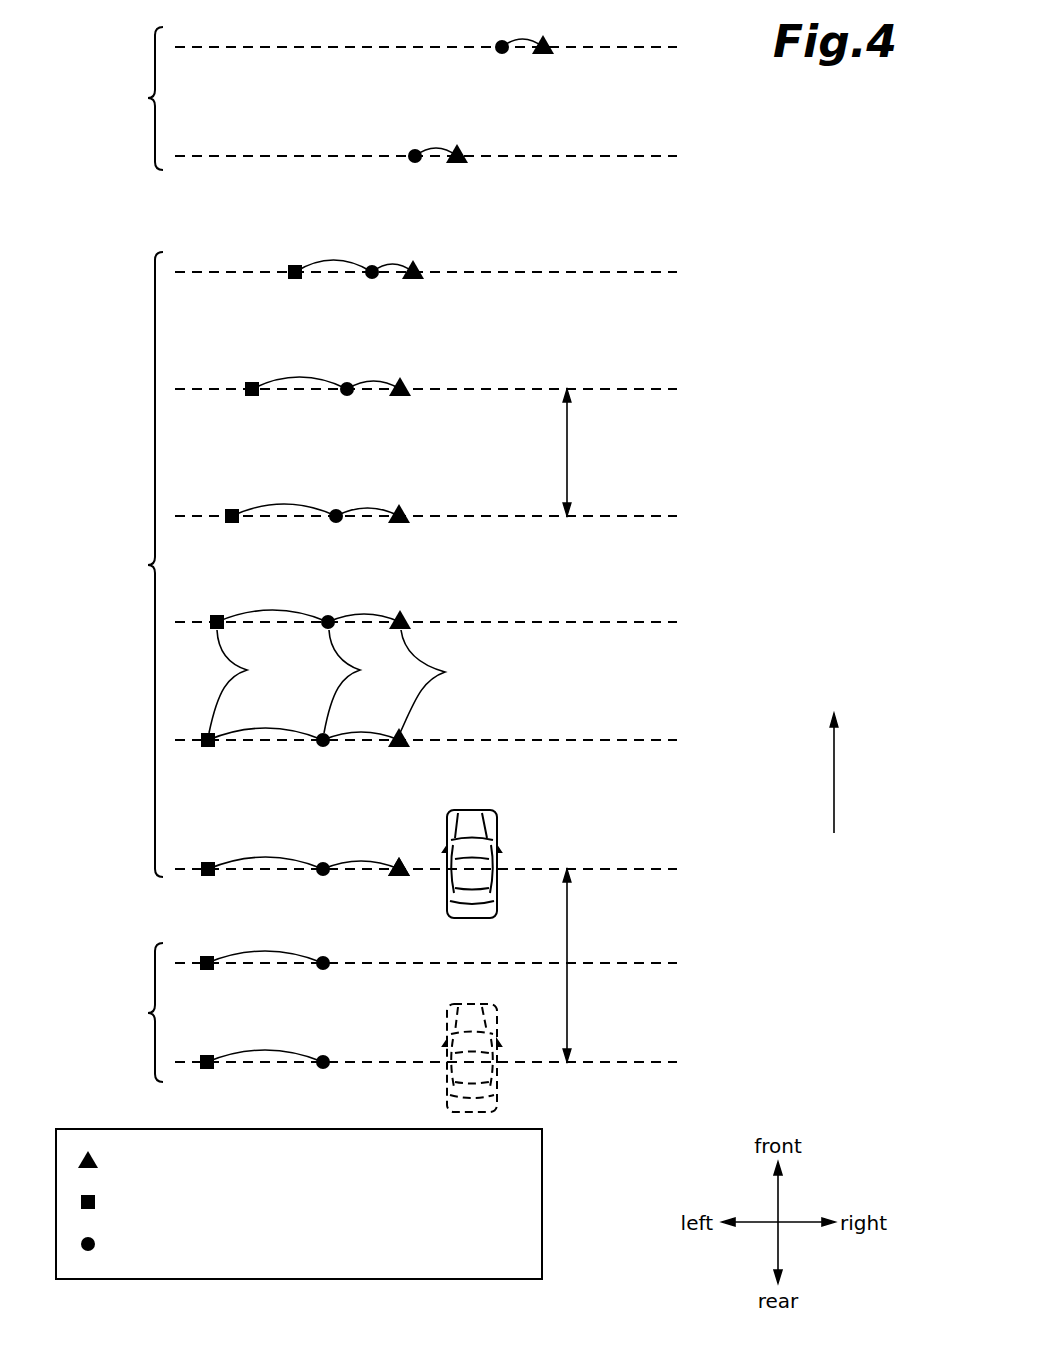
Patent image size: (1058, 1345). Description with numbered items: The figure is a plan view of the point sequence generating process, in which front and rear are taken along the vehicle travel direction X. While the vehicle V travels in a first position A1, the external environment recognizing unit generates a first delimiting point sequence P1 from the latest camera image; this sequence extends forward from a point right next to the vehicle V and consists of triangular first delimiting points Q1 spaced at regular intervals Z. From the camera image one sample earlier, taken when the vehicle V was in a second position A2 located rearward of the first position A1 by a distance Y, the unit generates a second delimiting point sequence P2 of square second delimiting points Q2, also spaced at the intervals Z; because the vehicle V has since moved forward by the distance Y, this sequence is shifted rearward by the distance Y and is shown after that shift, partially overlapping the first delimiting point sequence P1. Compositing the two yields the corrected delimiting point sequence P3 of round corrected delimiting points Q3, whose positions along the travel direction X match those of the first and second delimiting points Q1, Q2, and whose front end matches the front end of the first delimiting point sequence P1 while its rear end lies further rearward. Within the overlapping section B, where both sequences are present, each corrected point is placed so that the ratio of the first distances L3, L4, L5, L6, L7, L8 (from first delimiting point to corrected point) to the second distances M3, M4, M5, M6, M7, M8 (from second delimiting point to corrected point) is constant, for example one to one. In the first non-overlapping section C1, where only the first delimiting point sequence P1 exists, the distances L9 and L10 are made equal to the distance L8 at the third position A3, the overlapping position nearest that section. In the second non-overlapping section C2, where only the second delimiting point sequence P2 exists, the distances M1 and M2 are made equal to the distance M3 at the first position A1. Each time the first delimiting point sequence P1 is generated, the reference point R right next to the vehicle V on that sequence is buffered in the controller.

The fourth distance L10 is at (524, 32).
The fourth distance L9 is at (438, 141).
The first distance L8 is at (398, 256).
The first distance L7 is at (379, 373).
The first distance L6 is at (373, 500).
The first distance L5 is at (369, 606).
The first distance L4 is at (366, 724).
The first distance L3 is at (366, 853).
The second distance M8 is at (333, 256).
The second distance M7 is at (299, 373).
The second distance M6 is at (284, 500).
The second distance M5 is at (272, 606).
The second distance M4 is at (265, 724).
The second distance M3 is at (265, 853).
The other fourth distance M2 is at (265, 947).
The other fourth distance M1 is at (265, 1046).
The first delimiting point Q1 is at (440, 681).
The second delimiting point Q2 is at (246, 681).
The corrected delimiting point Q3 is at (360, 681).
The reference point R is at (404, 861).
The vehicle V is at (446, 1015).
The vehicle travel direction X is at (833, 790).
The distance Y is at (576, 965).
The regular interval Z is at (580, 452).
The first position A1 is at (443, 869).
The second position A2 is at (443, 1062).
The third position A3 is at (443, 272).
The overlapping section B is at (141, 564).
The first non-overlapping section C1 is at (133, 98).
The second non-overlapping section C2 is at (135, 1012).
The first delimiting point sequence P1 is at (252, 1161).
The second delimiting point sequence P2 is at (269, 1202).
The corrected delimiting point sequence P3 is at (280, 1244).